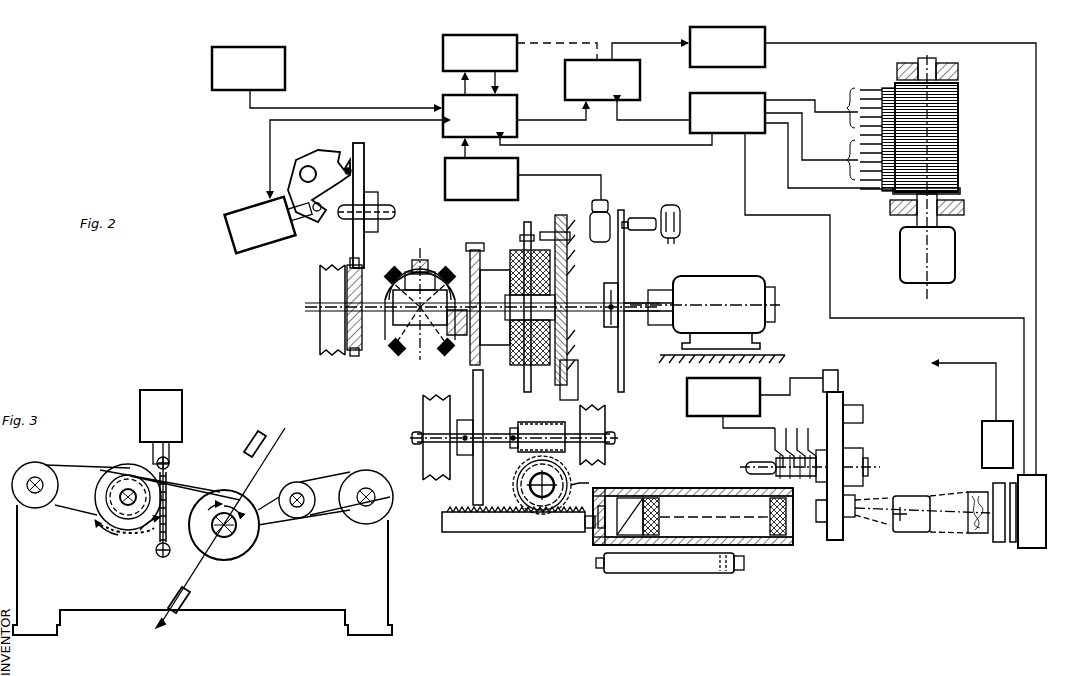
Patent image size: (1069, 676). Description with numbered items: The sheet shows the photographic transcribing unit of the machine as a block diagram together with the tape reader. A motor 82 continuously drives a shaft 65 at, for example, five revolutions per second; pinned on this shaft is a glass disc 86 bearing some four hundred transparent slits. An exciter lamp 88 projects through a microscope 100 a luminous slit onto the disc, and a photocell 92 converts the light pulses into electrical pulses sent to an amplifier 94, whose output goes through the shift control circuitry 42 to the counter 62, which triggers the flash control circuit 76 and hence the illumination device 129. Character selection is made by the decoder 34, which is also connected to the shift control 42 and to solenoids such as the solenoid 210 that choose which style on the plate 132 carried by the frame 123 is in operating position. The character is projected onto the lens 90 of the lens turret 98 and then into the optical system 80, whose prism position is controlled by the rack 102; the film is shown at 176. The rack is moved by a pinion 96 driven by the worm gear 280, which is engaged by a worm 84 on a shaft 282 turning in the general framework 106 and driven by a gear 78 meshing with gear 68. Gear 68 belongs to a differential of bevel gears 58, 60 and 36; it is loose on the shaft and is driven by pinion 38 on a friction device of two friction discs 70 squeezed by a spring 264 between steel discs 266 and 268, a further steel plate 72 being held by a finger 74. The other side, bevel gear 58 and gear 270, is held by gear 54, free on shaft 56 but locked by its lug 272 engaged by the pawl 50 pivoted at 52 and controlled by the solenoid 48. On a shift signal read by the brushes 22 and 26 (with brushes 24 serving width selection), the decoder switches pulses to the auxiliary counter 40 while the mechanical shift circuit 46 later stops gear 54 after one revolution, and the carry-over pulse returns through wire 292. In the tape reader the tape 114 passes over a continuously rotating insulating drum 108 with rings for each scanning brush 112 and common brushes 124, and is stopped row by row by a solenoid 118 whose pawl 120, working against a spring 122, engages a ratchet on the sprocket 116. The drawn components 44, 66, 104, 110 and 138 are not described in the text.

In FIG. 2, the brushes 22 is at (853, 111).
In FIG. 2, the brushes 24 is at (854, 160).
In FIG. 2, the brush 26 is at (848, 193).
In FIG. 2, the decoder 34 is at (727, 113).
In FIG. 2, the bevel gear 36 is at (428, 345).
In FIG. 2, the pinion 38 is at (480, 258).
In FIG. 2, the auxiliary counter 40 is at (480, 53).
In FIG. 2, the shift control circuitry 42 is at (480, 116).
In FIG. 2, the contact 44 is at (838, 378).
In FIG. 2, the mechanical shift circuit 46 is at (248, 68).
In FIG. 2, the solenoid 48 is at (271, 221).
In FIG. 2, the pawl 50 is at (326, 154).
In FIG. 2, the pivot 52 is at (295, 168).
In FIG. 2, the gear 54 is at (364, 162).
In FIG. 2, the shaft 56 is at (392, 195).
In FIG. 2, the bevel gear 58 is at (360, 345).
In FIG. 2, the bevel gear 60 is at (452, 255).
In FIG. 2, the counter 62 is at (602, 80).
In FIG. 2, the shaft 65 is at (632, 330).
In FIG. 2, the brush shaft 66 is at (770, 452).
In FIG. 2, the gear 68 is at (465, 338).
In FIG. 2, the friction discs 70 is at (555, 422).
In FIG. 2, the steel plate 72 is at (555, 232).
In FIG. 2, the finger 74 is at (524, 235).
In FIG. 2, the flash control circuit 76 is at (727, 47).
In FIG. 2, the gear 78 is at (483, 404).
In FIG. 2, the optical system 80 is at (630, 500).
In FIG. 2, the motor 82 is at (722, 290).
In FIG. 2, the worm 84 is at (575, 402).
In FIG. 2, the glass disc 86 is at (625, 258).
In FIG. 2, the exciter lamp 88 is at (680, 210).
In FIG. 2, the lens 90 is at (860, 502).
In FIG. 2, the photocell 92 is at (592, 242).
In FIG. 2, the amplifier 94 is at (481, 179).
In FIG. 2, the pinion 96 is at (520, 480).
In FIG. 2, the lens turret 98 is at (835, 540).
In FIG. 2, the microscope 100 is at (645, 218).
In FIG. 2, the rack 102 is at (508, 520).
In FIG. 2, the control unit 104 is at (723, 397).
In FIG. 2, the general framework 106 is at (960, 72).
In FIG. 3, the general framework 106 is at (308, 604).
In FIG. 2, the drum 108 is at (960, 190).
In FIG. 3, the drum 108 is at (243, 543).
In FIG. 2, the commutator drum 110 is at (960, 98).
In FIG. 2, the scanning brush 112 is at (887, 78).
In FIG. 3, the scanning brush 112 is at (237, 466).
In FIG. 3, the tape 114 is at (275, 514).
In FIG. 3, the sprocket 116 is at (134, 464).
In FIG. 3, the solenoid 118 is at (161, 427).
In FIG. 3, the pawl 120 is at (172, 466).
In FIG. 3, the spring 122 is at (170, 540).
In FIG. 2, the frame 123 is at (1000, 542).
In FIG. 3, the common brushes 124 is at (210, 580).
In FIG. 2, the illumination device 129 is at (1034, 548).
In FIG. 2, the plate 132 is at (1013, 542).
In FIG. 2, the lens 138 is at (975, 538).
In FIG. 2, the film 176 is at (696, 572).
In FIG. 2, the solenoid 210 is at (997, 444).
In FIG. 2, the spring 264 is at (512, 365).
In FIG. 2, the steel disc 266 is at (500, 235).
In FIG. 2, the steel disc 268 is at (550, 272).
In FIG. 2, the gear 270 is at (364, 268).
In FIG. 2, the lug 272 is at (344, 121).
In FIG. 2, the worm gear 280 is at (600, 475).
In FIG. 2, the shaft 282 is at (612, 445).
In FIG. 2, the wire 292 is at (500, 78).